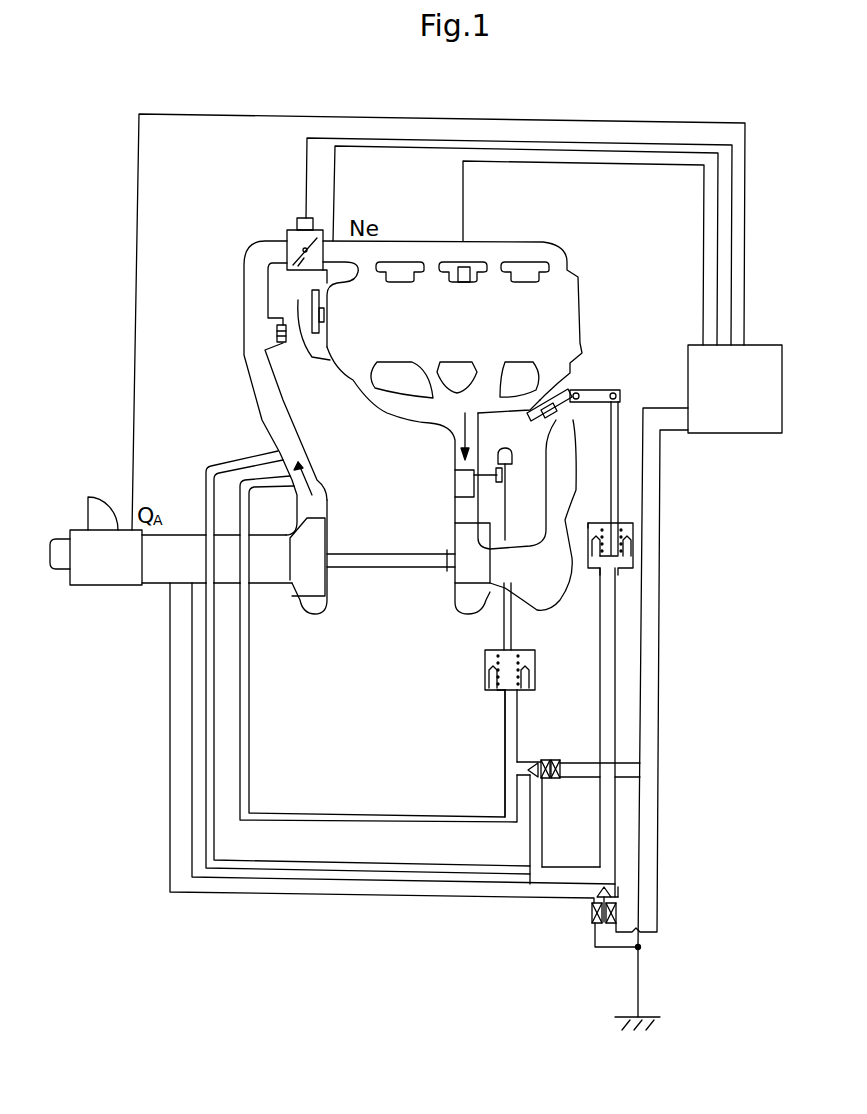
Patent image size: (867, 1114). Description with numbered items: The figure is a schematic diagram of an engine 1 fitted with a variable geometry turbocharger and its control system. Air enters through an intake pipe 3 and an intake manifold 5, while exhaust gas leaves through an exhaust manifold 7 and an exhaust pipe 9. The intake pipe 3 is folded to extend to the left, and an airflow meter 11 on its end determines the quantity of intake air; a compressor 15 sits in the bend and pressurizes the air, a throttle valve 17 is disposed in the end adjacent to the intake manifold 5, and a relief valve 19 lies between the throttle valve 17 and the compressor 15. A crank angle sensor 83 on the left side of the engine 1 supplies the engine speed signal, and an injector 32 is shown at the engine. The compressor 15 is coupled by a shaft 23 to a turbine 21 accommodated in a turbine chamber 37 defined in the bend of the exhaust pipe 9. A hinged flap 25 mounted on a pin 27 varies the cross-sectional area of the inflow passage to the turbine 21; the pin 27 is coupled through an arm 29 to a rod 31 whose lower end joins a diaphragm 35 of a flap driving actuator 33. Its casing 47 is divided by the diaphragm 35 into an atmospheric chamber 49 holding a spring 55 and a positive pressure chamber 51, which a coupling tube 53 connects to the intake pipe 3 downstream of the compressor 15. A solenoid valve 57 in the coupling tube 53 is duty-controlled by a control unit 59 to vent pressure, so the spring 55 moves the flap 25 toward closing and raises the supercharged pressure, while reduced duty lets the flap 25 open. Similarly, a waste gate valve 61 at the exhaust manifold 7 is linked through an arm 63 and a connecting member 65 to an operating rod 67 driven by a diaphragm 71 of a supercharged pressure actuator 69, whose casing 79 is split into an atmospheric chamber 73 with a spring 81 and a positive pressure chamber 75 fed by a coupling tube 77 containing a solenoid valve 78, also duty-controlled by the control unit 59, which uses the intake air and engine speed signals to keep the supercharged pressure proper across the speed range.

The engine 1 is at (580, 300).
The intake pipe 3 is at (276, 427).
The intake manifold 5 is at (396, 262).
The exhaust manifold 7 is at (398, 410).
The exhaust pipe 9 is at (455, 508).
The airflow meter 11 is at (127, 585).
The compressor 15 is at (302, 583).
The throttle valve 17 is at (297, 264).
The relief valve 19 is at (286, 343).
The turbine 21 is at (455, 581).
The shaft 23 is at (365, 554).
The hinged flap 25 is at (455, 479).
The pin 27 is at (483, 472).
The arm 29 is at (511, 452).
The rod 31 is at (311, 220).
The fuel injector 32 is at (470, 266).
The flap driving actuator 33 is at (480, 712).
The diaphragm 35 is at (495, 690).
The turbine chamber 37 is at (530, 535).
The casing 47 is at (485, 660).
The atmospheric chamber 49 is at (528, 660).
The positive pressure chamber 51 is at (529, 694).
The coupling tube 53 is at (510, 750).
The spring 55 is at (520, 651).
The solenoid valve 57 is at (555, 760).
The control unit 59 is at (722, 397).
The waste gate valve 61 is at (542, 395).
The arm 63 is at (567, 388).
The connecting member 65 is at (590, 403).
The operating rod 67 is at (622, 417).
The supercharged pressure actuator 69 is at (622, 520).
The diaphragm 71 is at (622, 561).
The atmospheric chamber 73 is at (633, 529).
The positive pressure chamber 75 is at (622, 570).
The coupling tube 77 is at (618, 675).
The solenoid valve 78 is at (592, 909).
The casing 79 is at (594, 523).
The spring 81 is at (603, 536).
The crank angle sensor 83 is at (314, 336).